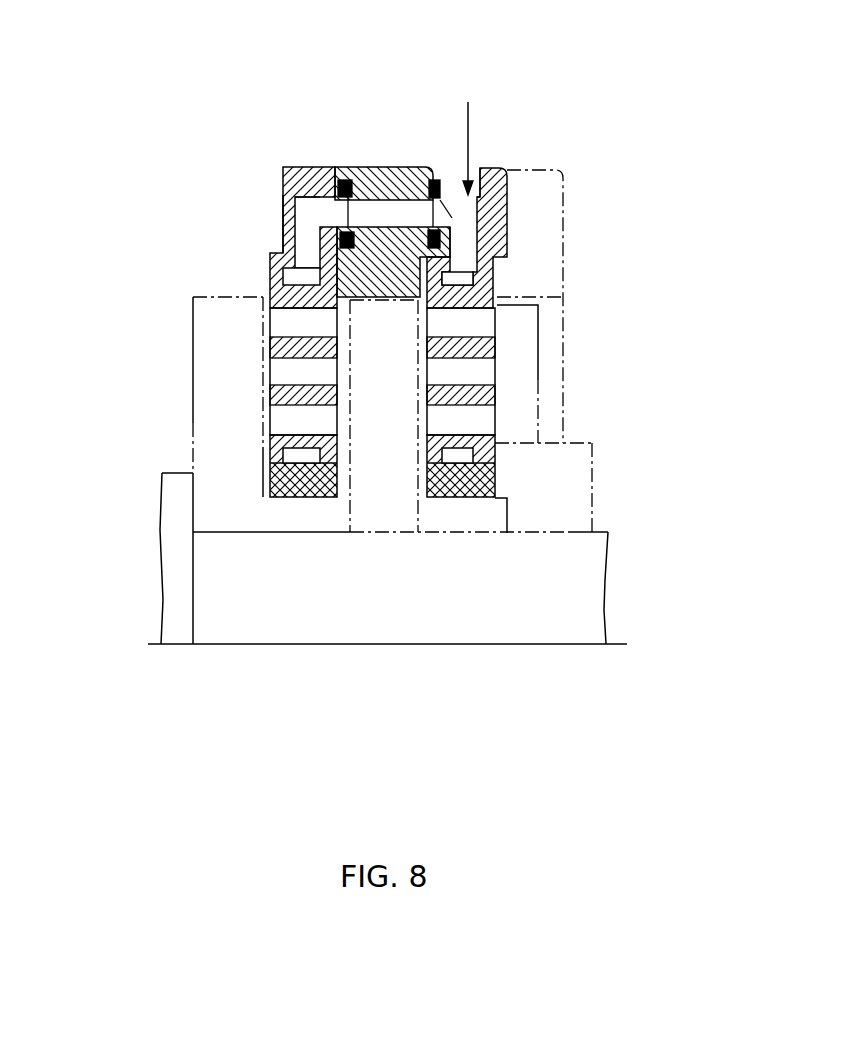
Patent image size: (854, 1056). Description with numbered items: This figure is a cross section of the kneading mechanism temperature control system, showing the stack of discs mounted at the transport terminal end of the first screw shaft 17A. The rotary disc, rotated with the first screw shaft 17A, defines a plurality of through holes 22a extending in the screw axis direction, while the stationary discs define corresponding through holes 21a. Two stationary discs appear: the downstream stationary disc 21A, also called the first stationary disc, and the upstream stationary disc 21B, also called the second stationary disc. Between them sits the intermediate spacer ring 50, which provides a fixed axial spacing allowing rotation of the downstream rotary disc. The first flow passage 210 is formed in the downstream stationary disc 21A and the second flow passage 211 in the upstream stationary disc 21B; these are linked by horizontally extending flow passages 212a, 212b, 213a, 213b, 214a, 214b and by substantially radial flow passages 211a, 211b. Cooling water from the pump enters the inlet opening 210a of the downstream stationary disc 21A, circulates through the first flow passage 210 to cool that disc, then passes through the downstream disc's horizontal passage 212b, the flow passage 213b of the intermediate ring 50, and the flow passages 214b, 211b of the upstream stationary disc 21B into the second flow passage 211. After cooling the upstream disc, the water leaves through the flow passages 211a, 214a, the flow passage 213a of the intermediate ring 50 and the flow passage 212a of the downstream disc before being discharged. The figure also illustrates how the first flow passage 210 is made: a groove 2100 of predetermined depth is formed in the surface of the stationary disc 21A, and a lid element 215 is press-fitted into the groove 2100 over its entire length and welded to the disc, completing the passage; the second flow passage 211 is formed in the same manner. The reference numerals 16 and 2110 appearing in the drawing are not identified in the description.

The motor 16 is at (120, 146).
The first screw shaft 17A is at (598, 598).
The downstream stationary disc 21A is at (508, 202).
The upstream stationary disc 21B is at (268, 452).
The through holes 21a is at (480, 423).
The through holes 22a is at (275, 371).
The intermediate spacer ring 50 is at (408, 293).
The first flow passage 210 is at (493, 263).
The inlet opening 210a is at (472, 227).
The groove 2100 is at (485, 334).
The second flow passage 211 is at (262, 381).
The flow passage 211a is at (303, 216).
The flow passage 211b is at (256, 150).
The inner wall 2110 is at (283, 252).
The flow passage 212a is at (452, 167).
The flow passage 212b is at (461, 143).
The flow passage 213a is at (384, 208).
The flow passage 213b is at (390, 179).
The flow passage 214a is at (335, 165).
The flow passage 214b is at (359, 132).
The lid element 215 is at (320, 284).